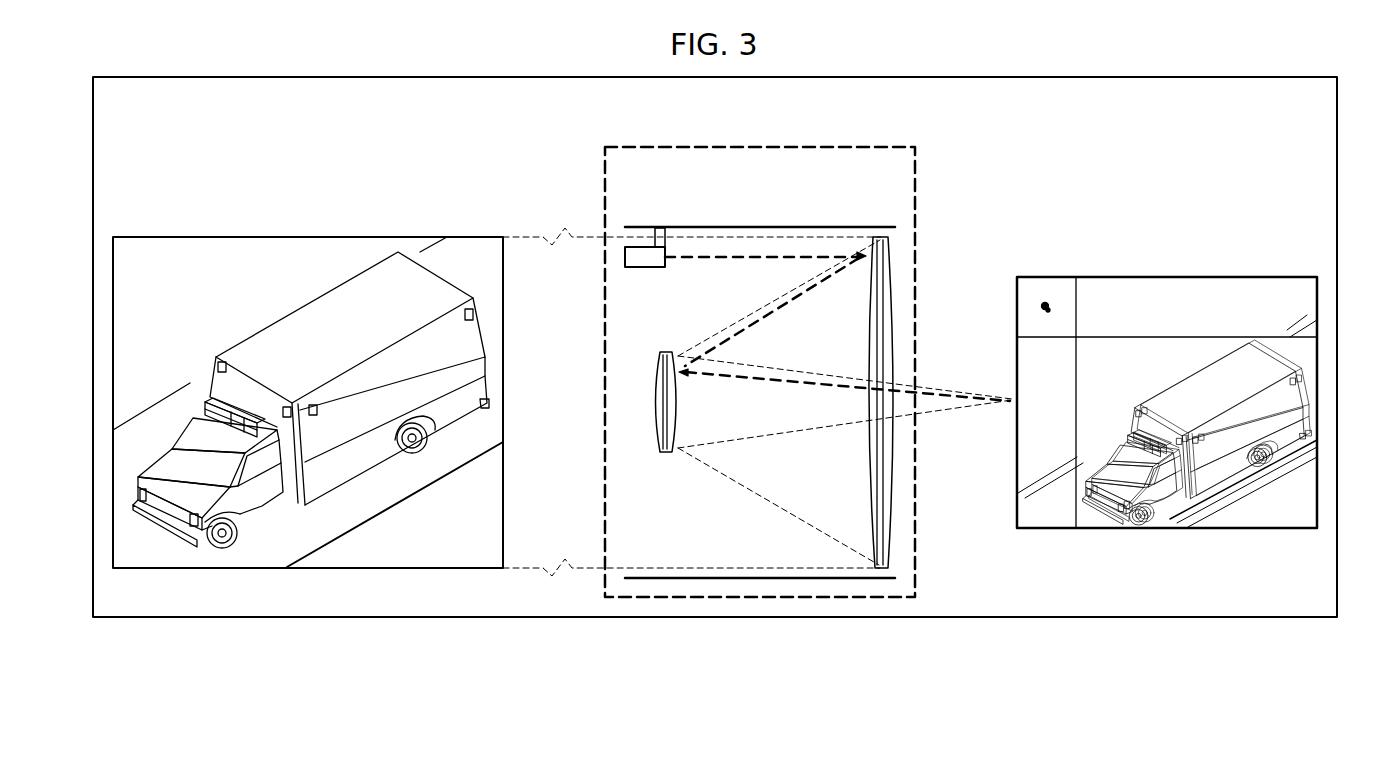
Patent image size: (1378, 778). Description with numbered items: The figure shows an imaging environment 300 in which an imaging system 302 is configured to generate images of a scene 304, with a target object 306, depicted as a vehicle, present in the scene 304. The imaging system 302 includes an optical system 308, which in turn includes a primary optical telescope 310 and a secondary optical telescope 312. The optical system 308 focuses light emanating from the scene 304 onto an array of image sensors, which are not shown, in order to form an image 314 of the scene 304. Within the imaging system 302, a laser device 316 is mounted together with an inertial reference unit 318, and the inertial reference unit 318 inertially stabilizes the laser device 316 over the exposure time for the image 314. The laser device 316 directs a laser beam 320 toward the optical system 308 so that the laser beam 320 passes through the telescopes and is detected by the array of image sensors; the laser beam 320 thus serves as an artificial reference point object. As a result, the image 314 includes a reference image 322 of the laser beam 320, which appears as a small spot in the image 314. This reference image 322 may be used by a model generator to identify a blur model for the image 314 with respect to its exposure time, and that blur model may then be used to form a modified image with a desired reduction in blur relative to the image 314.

The imaging environment 300 is at (428, 71).
The imaging system 302 is at (800, 139).
The scene 304 is at (274, 230).
The target object 306 is at (253, 337).
The optical system 308 is at (686, 513).
The primary optical telescope 310 is at (868, 478).
The secondary optical telescope 312 is at (668, 454).
The image 314 is at (1170, 269).
The laser device 316 is at (643, 262).
The inertial reference unit 318 is at (645, 214).
The laser beam 320 is at (718, 261).
The reference image 322 is at (1024, 303).